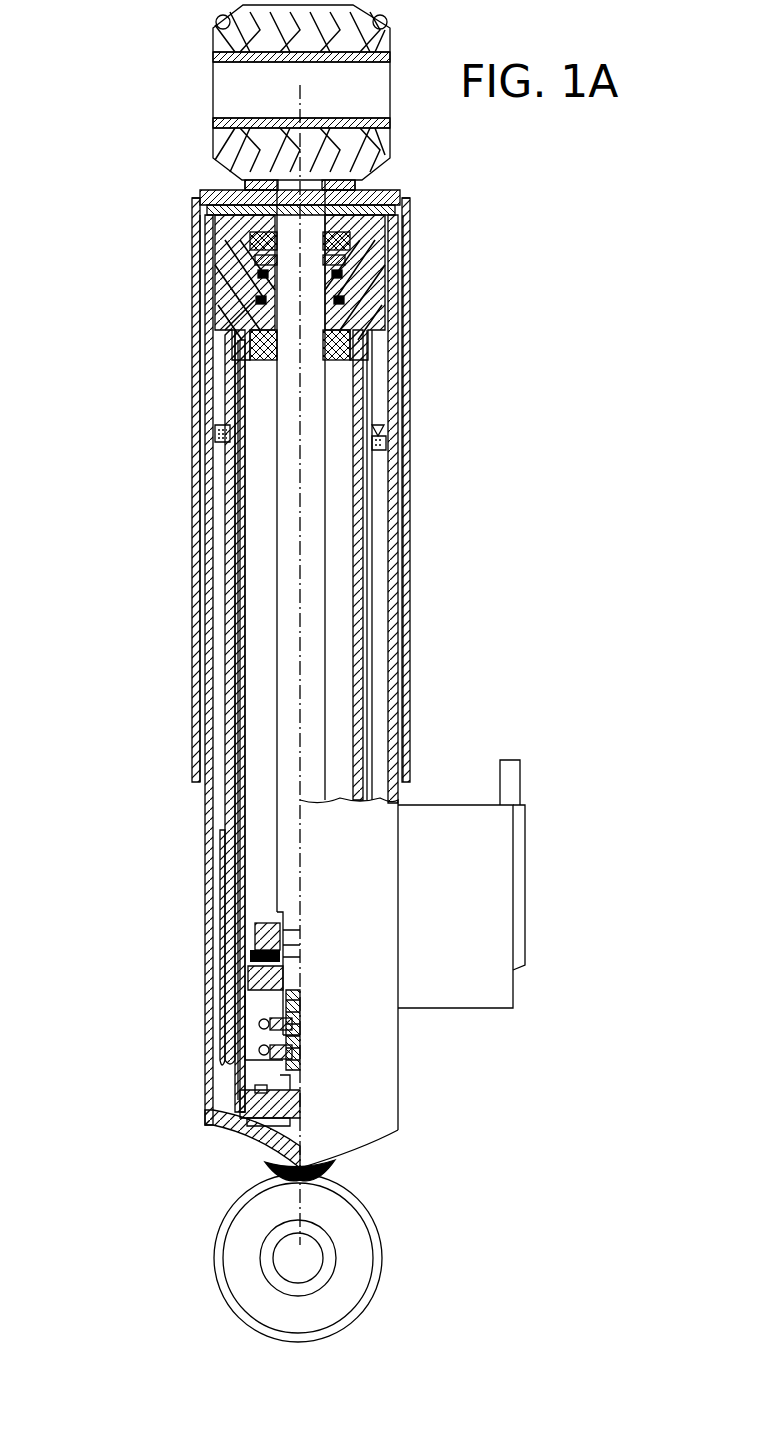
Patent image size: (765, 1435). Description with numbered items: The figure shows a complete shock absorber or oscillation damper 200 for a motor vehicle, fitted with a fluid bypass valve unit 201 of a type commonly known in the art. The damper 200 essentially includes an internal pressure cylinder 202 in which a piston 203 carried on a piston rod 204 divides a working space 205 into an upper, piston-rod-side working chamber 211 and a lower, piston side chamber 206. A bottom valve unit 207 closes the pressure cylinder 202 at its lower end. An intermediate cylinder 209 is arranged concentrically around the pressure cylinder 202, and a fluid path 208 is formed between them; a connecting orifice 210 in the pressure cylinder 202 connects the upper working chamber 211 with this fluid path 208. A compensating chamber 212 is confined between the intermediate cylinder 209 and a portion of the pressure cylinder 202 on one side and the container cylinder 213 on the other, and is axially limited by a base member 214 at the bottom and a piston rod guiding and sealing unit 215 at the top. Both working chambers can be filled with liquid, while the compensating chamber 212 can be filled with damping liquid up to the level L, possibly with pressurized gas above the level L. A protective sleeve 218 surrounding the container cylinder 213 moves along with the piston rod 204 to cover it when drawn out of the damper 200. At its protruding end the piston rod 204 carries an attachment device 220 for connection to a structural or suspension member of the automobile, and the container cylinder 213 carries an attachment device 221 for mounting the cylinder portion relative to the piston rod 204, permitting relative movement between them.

The oscillation damper 200 is at (160, 658).
The fluid bypass valve unit 201 is at (460, 798).
The pressure cylinder 202 is at (365, 602).
The piston 203 is at (243, 1000).
The piston rod 204 is at (317, 487).
The working space 205 is at (258, 463).
The piston side chamber 206 is at (250, 1077).
The bottom valve unit 207 is at (242, 1112).
The fluid path 208 is at (372, 640).
The intermediate cylinder 209 is at (373, 690).
The connecting orifice 210 is at (355, 405).
The upper working chamber 211 is at (258, 568).
The compensating chamber 212 is at (378, 572).
The container cylinder 213 is at (392, 532).
The base member 214 is at (217, 1133).
The piston rod guiding and sealing unit 215 is at (372, 298).
The protective sleeve 218 is at (197, 205).
The attachment device 220 is at (228, 43).
The attachment device 221 is at (350, 1268).
The level L is at (225, 430).